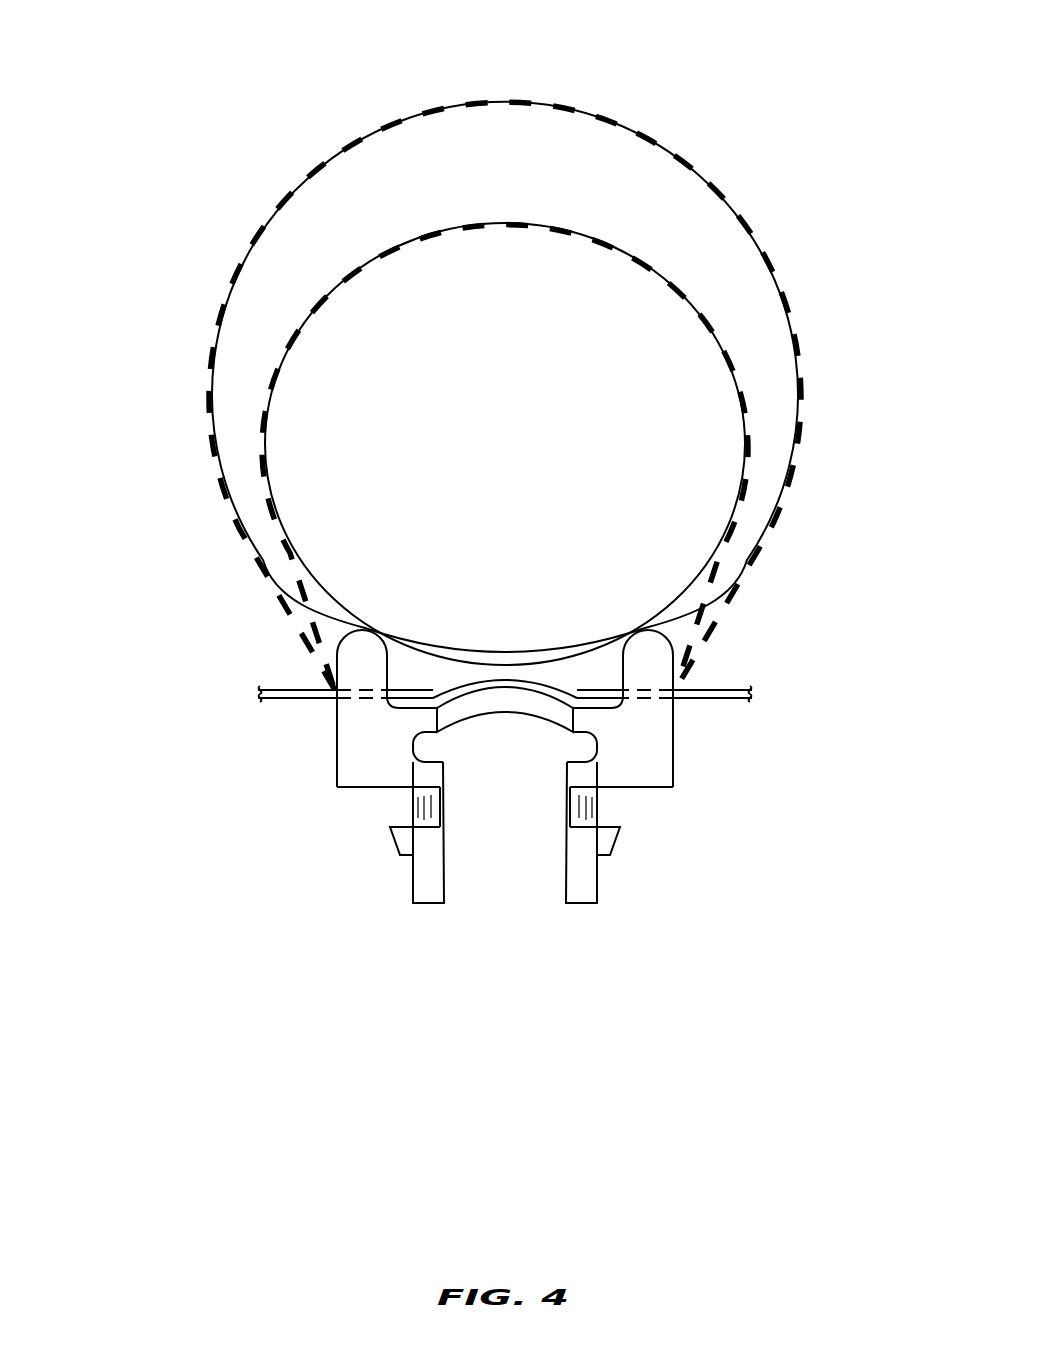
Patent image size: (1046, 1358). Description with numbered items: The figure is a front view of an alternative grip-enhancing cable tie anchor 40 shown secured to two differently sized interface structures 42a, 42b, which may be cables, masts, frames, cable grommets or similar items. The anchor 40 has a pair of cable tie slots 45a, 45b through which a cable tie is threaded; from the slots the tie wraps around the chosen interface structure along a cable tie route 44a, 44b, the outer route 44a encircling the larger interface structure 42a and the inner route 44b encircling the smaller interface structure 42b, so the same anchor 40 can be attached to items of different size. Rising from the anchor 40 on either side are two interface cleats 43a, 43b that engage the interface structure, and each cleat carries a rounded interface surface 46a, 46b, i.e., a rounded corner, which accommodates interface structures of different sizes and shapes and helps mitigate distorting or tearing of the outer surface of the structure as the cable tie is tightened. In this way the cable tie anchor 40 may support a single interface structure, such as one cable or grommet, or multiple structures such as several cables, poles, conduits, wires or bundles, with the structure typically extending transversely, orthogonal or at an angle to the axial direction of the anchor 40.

The grip-enhancing cable tie anchor 40 is at (488, 994).
The interface structure 42a is at (340, 197).
The interface structure 42b is at (567, 289).
The interface cleat 43a is at (379, 601).
The interface cleat 43b is at (626, 601).
The cable tie route 44a is at (250, 229).
The cable tie route 44b is at (655, 263).
The cable tie slot 45a is at (281, 672).
The cable tie slot 45b is at (729, 672).
The rounded interface surface 46a is at (354, 664).
The rounded interface surface 46b is at (656, 664).